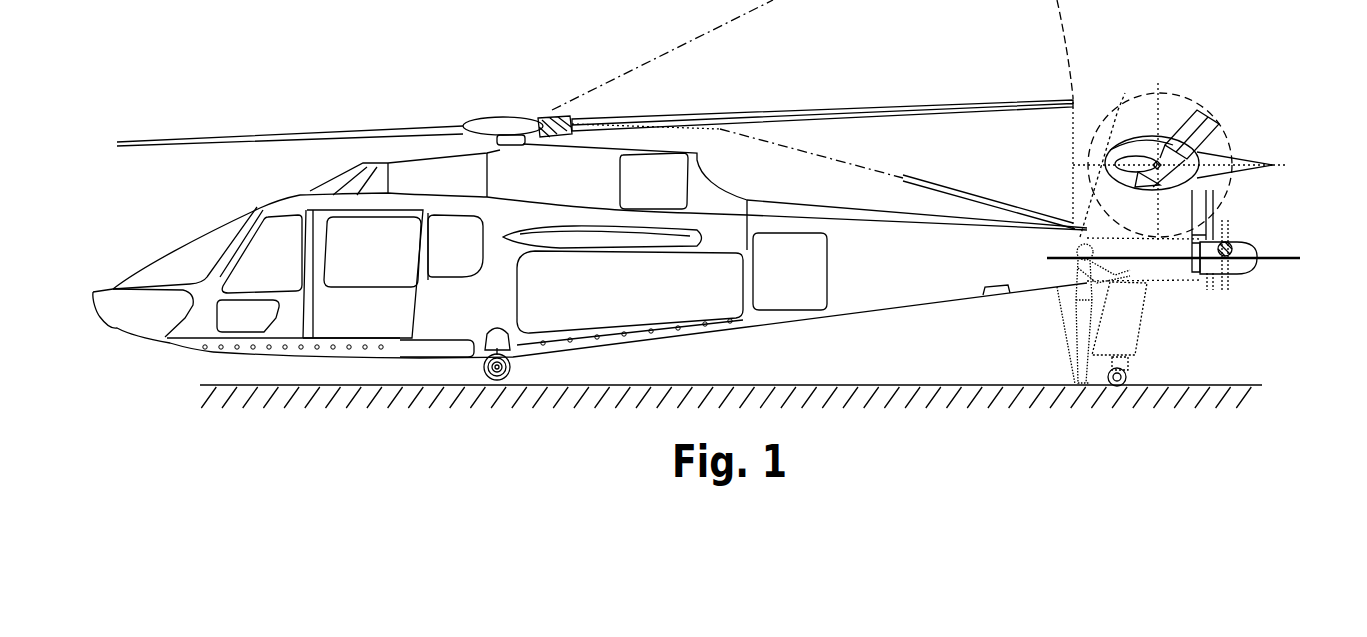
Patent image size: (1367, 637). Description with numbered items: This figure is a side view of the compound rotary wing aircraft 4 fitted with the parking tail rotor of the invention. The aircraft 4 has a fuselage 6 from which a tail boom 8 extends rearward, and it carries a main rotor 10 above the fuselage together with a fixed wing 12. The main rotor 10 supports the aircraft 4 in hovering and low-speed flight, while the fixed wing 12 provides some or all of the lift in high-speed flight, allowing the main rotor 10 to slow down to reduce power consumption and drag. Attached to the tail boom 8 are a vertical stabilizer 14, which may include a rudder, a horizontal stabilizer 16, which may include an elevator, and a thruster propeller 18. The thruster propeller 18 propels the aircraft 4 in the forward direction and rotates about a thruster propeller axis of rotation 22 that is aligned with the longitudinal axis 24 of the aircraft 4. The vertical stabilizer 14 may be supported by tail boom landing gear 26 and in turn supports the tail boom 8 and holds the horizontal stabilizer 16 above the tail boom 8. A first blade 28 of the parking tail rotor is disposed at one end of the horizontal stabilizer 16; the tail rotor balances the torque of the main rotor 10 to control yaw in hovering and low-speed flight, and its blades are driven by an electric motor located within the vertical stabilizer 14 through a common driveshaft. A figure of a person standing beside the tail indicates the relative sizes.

The rotary wing aircraft 4 is at (160, 250).
The fuselage 6 is at (183, 352).
The tail boom 8 is at (895, 307).
The main rotor 10 is at (295, 133).
The fixed wing 12 is at (544, 243).
The vertical stabilizer 14 is at (1138, 207).
The horizontal stabilizer 16 is at (1137, 160).
The thruster propeller 18 is at (1242, 244).
The thruster propeller axis of rotation 22 is at (1270, 258).
The longitudinal axis 24 is at (1183, 260).
The tail boom landing gear 26 is at (1130, 383).
The first blade 28 is at (1200, 125).